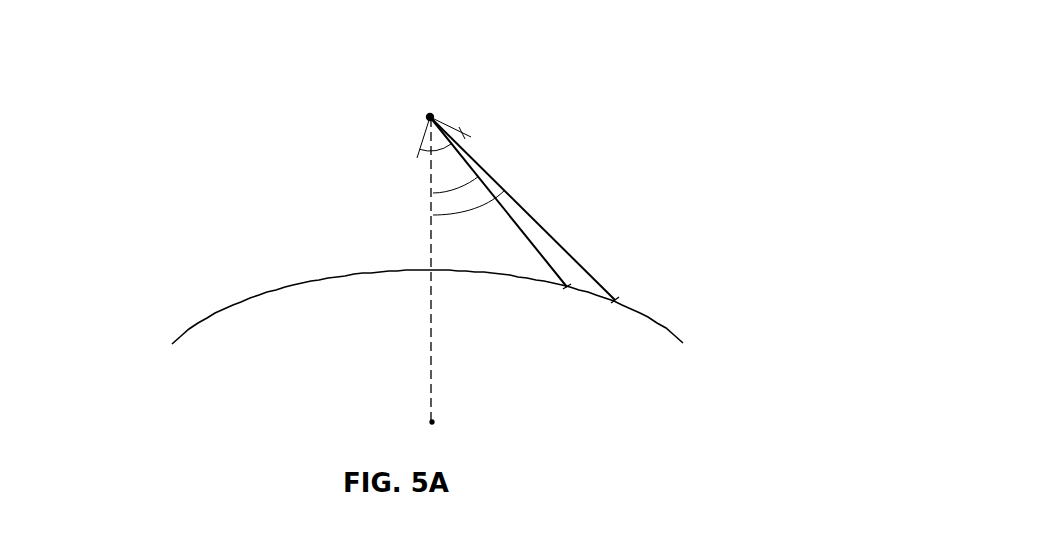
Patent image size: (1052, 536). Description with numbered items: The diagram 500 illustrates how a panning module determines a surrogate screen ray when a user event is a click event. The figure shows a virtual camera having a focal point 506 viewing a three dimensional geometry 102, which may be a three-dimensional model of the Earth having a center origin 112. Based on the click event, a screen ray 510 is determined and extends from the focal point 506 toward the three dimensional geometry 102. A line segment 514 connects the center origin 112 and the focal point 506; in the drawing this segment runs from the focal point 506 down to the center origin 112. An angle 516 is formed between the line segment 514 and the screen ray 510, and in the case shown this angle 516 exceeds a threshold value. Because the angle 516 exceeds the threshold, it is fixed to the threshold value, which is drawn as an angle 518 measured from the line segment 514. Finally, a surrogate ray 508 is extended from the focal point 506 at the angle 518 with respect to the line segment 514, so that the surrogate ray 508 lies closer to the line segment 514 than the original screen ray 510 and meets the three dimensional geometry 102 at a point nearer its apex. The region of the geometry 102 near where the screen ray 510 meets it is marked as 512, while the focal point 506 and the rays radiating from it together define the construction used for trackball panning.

The geometric diagram of display optics 500 is at (758, 46).
The three dimensional geometry 102 is at (187, 330).
The center origin 112 is at (432, 422).
The focal point 506 is at (434, 116).
The surrogate ray 508 is at (545, 255).
The screen ray 510 is at (596, 279).
The display surface segment near Q0 512 is at (617, 300).
The line segment 514 is at (432, 228).
The angle 516 is at (504, 212).
The angle 518 is at (480, 178).